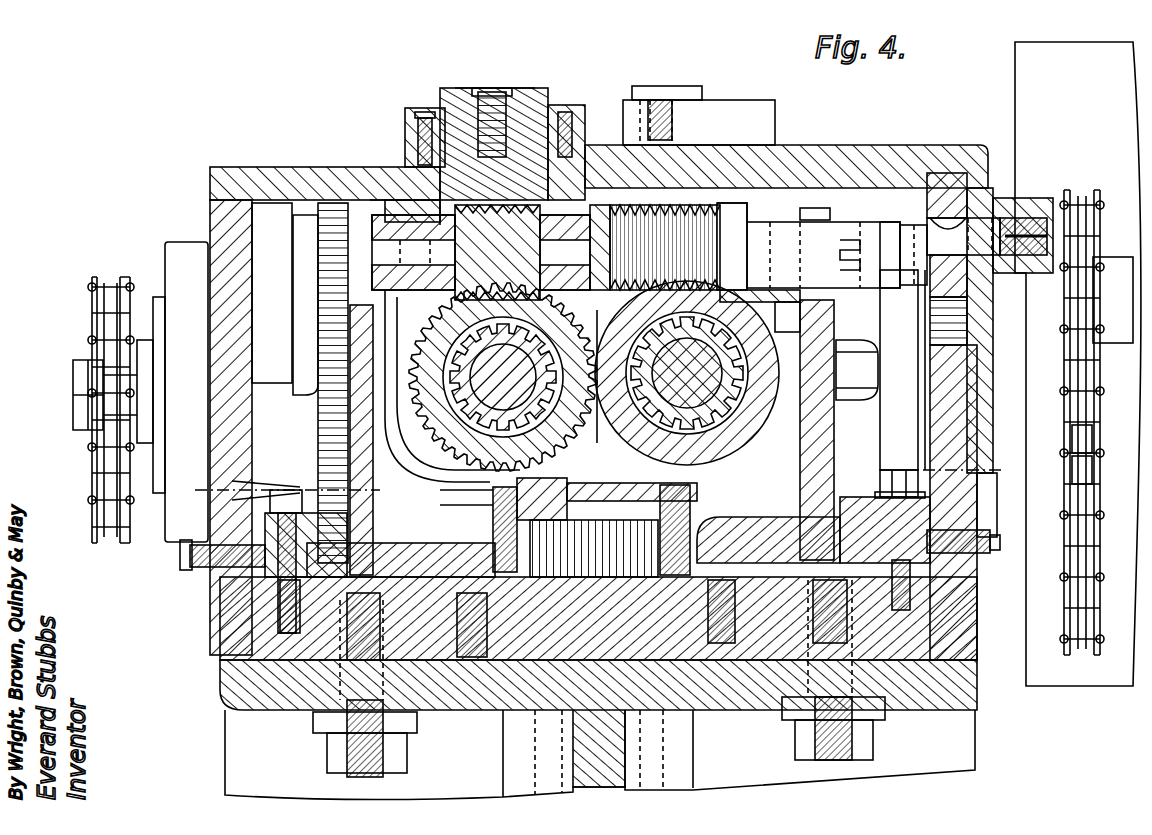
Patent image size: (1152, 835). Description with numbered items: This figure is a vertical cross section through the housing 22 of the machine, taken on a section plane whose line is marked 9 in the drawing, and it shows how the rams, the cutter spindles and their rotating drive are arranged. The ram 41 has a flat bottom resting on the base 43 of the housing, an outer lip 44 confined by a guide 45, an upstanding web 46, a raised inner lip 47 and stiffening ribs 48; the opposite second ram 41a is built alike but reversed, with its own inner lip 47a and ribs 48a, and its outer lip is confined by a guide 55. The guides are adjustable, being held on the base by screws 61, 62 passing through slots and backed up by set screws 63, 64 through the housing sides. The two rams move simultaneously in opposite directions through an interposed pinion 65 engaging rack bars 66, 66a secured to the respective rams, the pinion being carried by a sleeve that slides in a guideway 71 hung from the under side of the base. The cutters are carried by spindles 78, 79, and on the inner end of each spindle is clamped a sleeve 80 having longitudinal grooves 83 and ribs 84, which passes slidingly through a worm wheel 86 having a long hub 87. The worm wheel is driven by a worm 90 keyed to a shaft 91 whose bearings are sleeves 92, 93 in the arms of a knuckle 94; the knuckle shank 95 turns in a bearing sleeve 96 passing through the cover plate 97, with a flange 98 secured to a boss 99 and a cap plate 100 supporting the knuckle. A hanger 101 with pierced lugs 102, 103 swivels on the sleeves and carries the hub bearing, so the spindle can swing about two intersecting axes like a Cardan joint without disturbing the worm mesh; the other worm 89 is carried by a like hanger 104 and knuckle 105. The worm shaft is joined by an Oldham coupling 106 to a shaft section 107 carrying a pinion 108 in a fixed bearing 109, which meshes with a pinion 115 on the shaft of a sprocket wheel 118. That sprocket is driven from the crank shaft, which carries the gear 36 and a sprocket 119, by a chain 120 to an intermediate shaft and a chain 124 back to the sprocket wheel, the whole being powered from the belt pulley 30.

The section line 9 is at (597, 477).
The housing 22 is at (225, 215).
The belt pulley 30 is at (1050, 50).
The gear 36 is at (318, 243).
The ram 41 is at (760, 545).
The second ram 41a is at (455, 552).
The base of the housing 43 is at (960, 598).
The outer lip 44 is at (850, 500).
The guide 45 is at (885, 470).
The web 46 is at (880, 305).
The inner lip 47 is at (567, 495).
The inner lip of second ram 47a is at (580, 482).
The stiffening ribs 48 is at (765, 470).
The stiffening ribs of second ram 48a is at (449, 483).
The guide 55 is at (300, 488).
The screw 61 is at (925, 486).
The screw 62 is at (232, 488).
The set screw 63 is at (1000, 545).
The set screw 64 is at (195, 560).
The pinion 65 is at (590, 525).
The rack bar 66 is at (690, 520).
The rack bar 66a is at (493, 515).
The guideway 71 is at (690, 748).
The spindle 78 is at (760, 395).
The spindle 79 is at (500, 345).
The sleeve 80 is at (770, 345).
The longitudinal grooves 83 is at (445, 335).
The ribs 84 is at (460, 330).
The worm wheel 86 is at (398, 425).
The hub 87 is at (748, 292).
The worm 89 is at (740, 205).
The worm 90 is at (398, 205).
The shaft 91 is at (603, 230).
The bearing sleeve 92 is at (430, 240).
The bearing sleeve 93 is at (555, 240).
The knuckle 94 is at (588, 190).
The shank 95 is at (490, 92).
The bearing sleeve 96 is at (448, 110).
The cover plate 97 is at (288, 170).
The flange 98 is at (410, 118).
The boss 99 is at (405, 130).
The cap plate 100 is at (465, 88).
The hanger 101 is at (318, 348).
The pierced lug 102 is at (385, 200).
The pierced lug 103 is at (610, 200).
The hanger 104 is at (800, 305).
The knuckle 105 is at (750, 215).
The coupling 106 is at (880, 225).
The shaft section 107 is at (905, 225).
The pinion 108 is at (945, 185).
The fixed bearing 109 is at (1015, 198).
The pinion 115 is at (938, 322).
The sprocket wheel 118 is at (1068, 302).
The sprocket 119 is at (73, 390).
The chain 120 is at (90, 320).
The chain 124 is at (1075, 448).